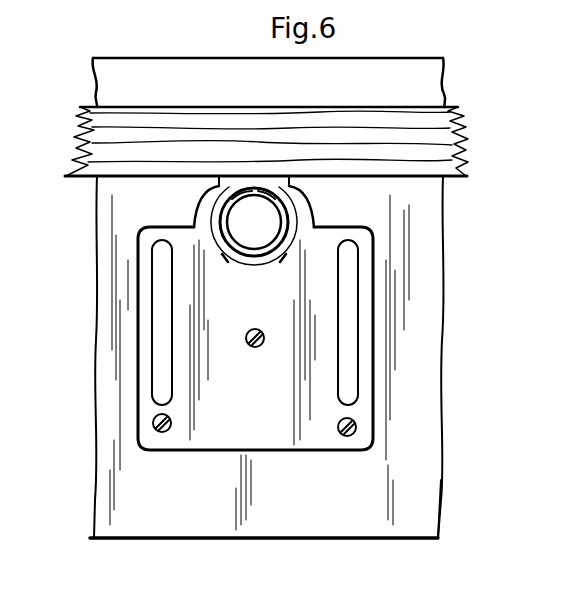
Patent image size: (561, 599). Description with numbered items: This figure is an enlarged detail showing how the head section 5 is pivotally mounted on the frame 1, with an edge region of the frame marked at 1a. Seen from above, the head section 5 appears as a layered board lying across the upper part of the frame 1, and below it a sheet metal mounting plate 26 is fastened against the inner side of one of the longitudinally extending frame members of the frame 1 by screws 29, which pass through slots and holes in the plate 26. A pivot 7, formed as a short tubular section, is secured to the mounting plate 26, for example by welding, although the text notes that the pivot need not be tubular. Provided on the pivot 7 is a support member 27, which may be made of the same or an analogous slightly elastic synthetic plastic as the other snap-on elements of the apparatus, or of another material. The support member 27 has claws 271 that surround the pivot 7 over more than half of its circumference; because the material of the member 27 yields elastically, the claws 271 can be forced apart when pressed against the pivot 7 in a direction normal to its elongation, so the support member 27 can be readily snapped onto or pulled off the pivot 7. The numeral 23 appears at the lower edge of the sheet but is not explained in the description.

The frame 1 is at (127, 505).
The edge of base board 1a is at (413, 520).
The head section 5 is at (391, 118).
The pivot 7 is at (237, 215).
The mounting plate 26 is at (365, 392).
The support member 27 is at (233, 180).
The claws 271 is at (276, 253).
The screws 29 is at (347, 437).
The sheet numeral 23 is at (476, 593).